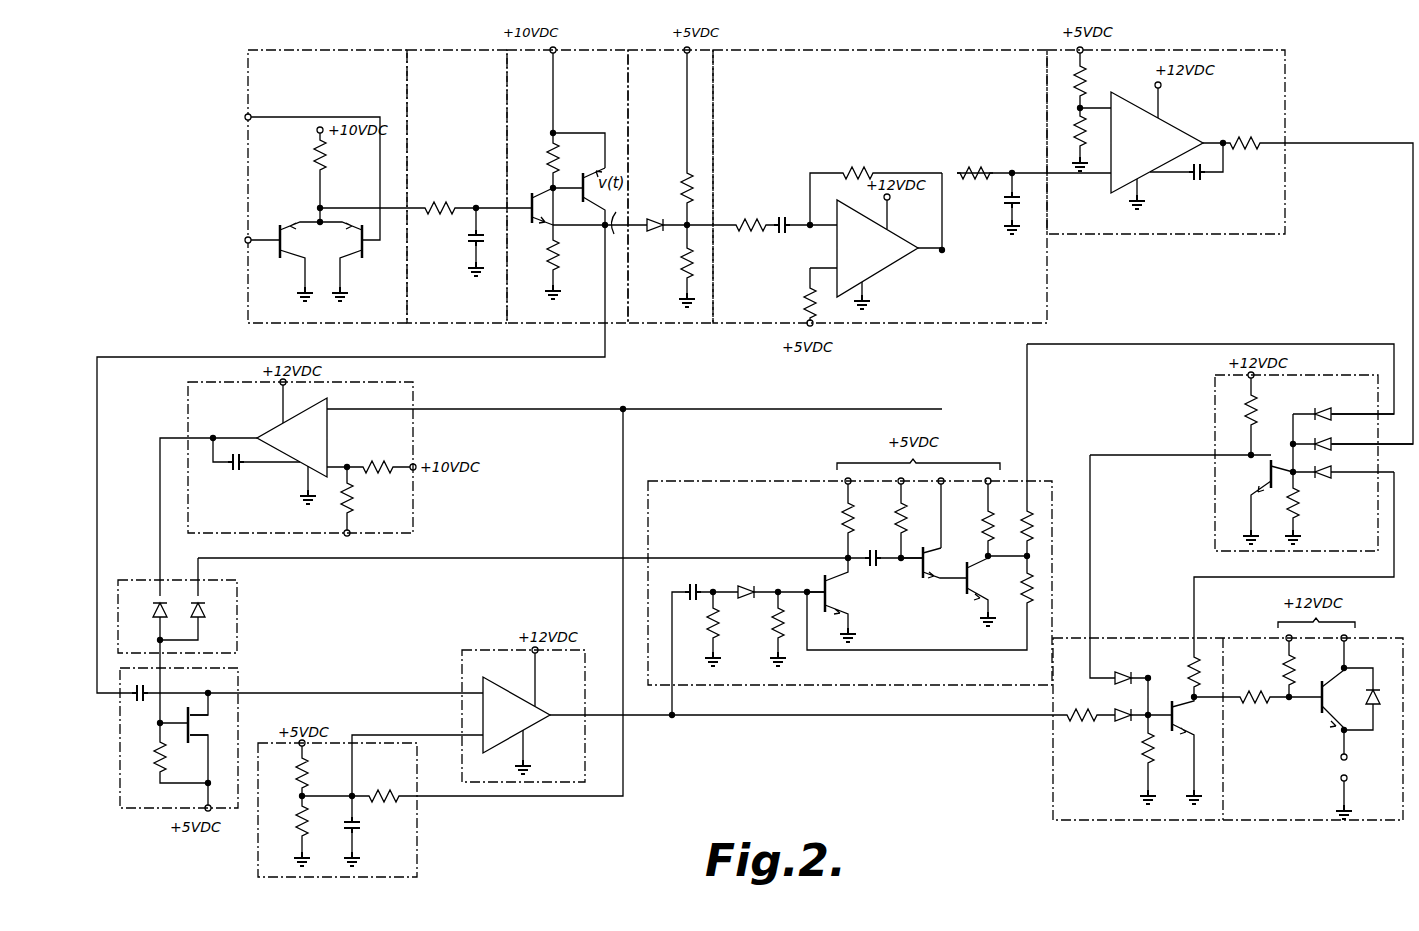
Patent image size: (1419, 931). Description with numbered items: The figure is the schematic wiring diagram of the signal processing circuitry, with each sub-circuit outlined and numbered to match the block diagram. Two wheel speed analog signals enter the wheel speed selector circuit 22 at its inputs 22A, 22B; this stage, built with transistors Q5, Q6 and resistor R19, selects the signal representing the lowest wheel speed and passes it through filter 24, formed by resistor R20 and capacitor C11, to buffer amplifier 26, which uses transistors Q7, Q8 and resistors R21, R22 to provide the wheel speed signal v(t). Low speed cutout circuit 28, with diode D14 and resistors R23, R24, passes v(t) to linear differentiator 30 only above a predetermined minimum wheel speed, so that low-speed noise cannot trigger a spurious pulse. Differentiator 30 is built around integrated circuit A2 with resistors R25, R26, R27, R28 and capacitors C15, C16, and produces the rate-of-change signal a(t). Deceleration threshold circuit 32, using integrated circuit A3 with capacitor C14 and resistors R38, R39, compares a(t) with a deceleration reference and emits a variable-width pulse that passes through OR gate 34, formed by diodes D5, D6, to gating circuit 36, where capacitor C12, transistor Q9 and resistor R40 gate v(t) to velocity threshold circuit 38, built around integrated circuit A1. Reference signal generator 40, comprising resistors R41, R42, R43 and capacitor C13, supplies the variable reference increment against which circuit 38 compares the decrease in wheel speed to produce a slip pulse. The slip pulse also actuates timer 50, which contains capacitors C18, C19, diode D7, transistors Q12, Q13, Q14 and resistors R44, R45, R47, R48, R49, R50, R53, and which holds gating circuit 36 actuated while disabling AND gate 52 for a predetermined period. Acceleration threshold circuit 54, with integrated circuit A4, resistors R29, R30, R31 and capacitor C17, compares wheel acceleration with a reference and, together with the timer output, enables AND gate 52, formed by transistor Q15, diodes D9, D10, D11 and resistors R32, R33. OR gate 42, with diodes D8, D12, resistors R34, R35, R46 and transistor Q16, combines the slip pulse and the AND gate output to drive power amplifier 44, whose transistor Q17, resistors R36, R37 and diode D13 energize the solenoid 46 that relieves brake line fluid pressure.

The wheel speed selector circuit 22 is at (351, 44).
The input terminal 22A is at (244, 117).
The input terminal 22B is at (244, 240).
The filter 24 is at (471, 44).
The buffer amplifier 26 is at (614, 43).
The low speed cutout circuit 28 is at (665, 41).
The linear differentiator 30 is at (913, 43).
The deceleration threshold circuit 32 is at (426, 387).
The OR gate 34 is at (248, 605).
The gating circuit 36 is at (250, 671).
The velocity threshold circuit 38 is at (493, 639).
The reference signal generator 40 is at (256, 846).
The OR gate 42 is at (1047, 752).
The power amplifier 44 is at (1243, 833).
The solenoid 46 is at (1338, 766).
The timer 50 is at (740, 473).
The AND gate 52 is at (1207, 393).
The acceleration threshold circuit 54 is at (1230, 43).
The resistor R19 is at (312, 158).
The resistor R20 is at (446, 192).
The resistor R21 is at (550, 154).
The resistor R22 is at (563, 256).
The resistor R23 is at (682, 168).
The resistor R24 is at (680, 262).
The resistor R25 is at (742, 214).
The resistor R26 is at (856, 166).
The resistor R27 is at (806, 286).
The resistor R28 is at (972, 165).
The resistor R29 is at (1078, 160).
The resistor R30 is at (1086, 78).
The resistor R31 is at (1248, 134).
The resistor R32 is at (1300, 508).
The resistor R33 is at (1254, 408).
The resistor R34 is at (1186, 672).
The resistor R35 is at (1140, 760).
The resistor R36 is at (1244, 706).
The resistor R37 is at (1282, 670).
The resistor R38 is at (366, 459).
The resistor R39 is at (376, 496).
The resistor R40 is at (158, 756).
The resistor R41 is at (308, 790).
The resistor R42 is at (374, 790).
The resistor R43 is at (296, 826).
The resistor R44 is at (772, 628).
The resistor R45 is at (1020, 586).
The resistor R46 is at (1094, 708).
The resistor R47 is at (840, 516).
The resistor R48 is at (894, 518).
The resistor R49 is at (980, 518).
The resistor R50 is at (1020, 518).
The resistor R53 is at (719, 608).
The capacitor C11 is at (470, 240).
The capacitor C12 is at (138, 698).
The capacitor C13 is at (362, 824).
The capacitor C14 is at (236, 476).
The capacitor C15 is at (781, 234).
The capacitor C16 is at (998, 198).
The capacitor C17 is at (1196, 182).
The capacitor C18 is at (690, 584).
The capacitor C19 is at (880, 568).
The diode D5 is at (154, 614).
The diode D6 is at (206, 614).
The diode D7 is at (744, 588).
The diode D8 is at (1120, 726).
The diode D9 is at (1331, 470).
The diode D10 is at (1331, 442).
The diode D11 is at (1334, 402).
The diode D12 is at (1118, 664).
The diode D13 is at (1384, 688).
The diode D14 is at (655, 215).
The transistor Q5 is at (291, 261).
The transistor Q6 is at (348, 261).
The transistor Q7 is at (532, 217).
The transistor Q8 is at (594, 166).
The transistor Q9 is at (213, 725).
The transistor Q12 is at (846, 586).
The transistor Q13 is at (932, 582).
The transistor Q14 is at (976, 606).
The transistor Q15 is at (1256, 502).
The transistor Q16 is at (1198, 750).
The transistor Q17 is at (1330, 714).
The integrated circuit A1 is at (538, 700).
The integrated circuit A2 is at (882, 273).
The integrated circuit A3 is at (298, 474).
The integrated circuit A4 is at (1168, 124).